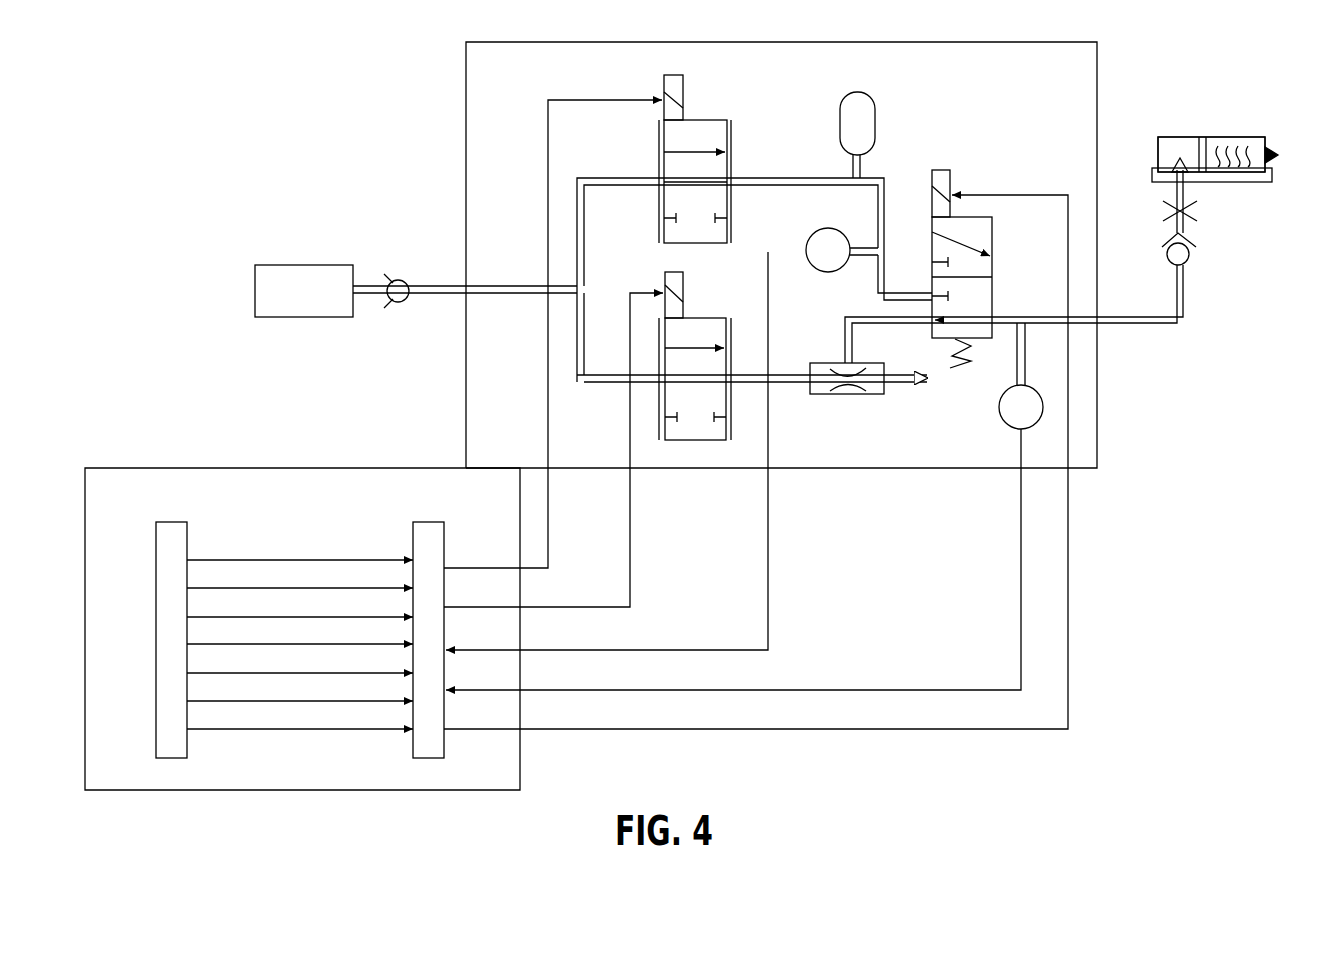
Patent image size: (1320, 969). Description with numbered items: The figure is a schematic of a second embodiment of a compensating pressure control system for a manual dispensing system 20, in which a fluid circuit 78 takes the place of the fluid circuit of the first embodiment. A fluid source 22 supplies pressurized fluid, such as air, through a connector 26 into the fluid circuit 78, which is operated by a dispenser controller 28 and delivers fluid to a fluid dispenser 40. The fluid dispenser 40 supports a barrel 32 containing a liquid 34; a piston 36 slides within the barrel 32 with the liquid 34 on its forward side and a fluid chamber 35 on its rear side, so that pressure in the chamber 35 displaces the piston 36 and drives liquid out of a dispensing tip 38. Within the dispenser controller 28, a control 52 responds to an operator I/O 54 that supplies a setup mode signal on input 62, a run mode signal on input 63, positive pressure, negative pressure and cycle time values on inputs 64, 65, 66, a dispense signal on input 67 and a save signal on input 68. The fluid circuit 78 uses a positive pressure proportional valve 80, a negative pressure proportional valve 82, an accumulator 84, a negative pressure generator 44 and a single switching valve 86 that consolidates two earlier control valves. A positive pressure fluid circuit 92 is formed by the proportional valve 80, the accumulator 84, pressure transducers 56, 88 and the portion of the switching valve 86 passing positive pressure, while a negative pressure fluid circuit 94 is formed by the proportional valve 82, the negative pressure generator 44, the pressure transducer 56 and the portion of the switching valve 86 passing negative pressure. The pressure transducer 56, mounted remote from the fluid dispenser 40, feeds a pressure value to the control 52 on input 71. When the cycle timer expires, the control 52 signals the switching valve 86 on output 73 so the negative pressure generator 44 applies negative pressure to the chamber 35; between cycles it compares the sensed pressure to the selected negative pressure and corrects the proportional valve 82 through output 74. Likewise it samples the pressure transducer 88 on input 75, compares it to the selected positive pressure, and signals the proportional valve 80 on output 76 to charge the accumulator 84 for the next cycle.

The manual dispensing system 20 is at (186, 167).
The fluid source 22 is at (275, 265).
The connector 26 is at (409, 281).
The dispenser controller 28 is at (130, 742).
The barrel 32 is at (1166, 137).
The liquid 34 is at (1255, 137).
The fluid chamber 35 is at (1158, 150).
The piston 36 is at (1203, 137).
The dispensing tip 38 is at (1279, 156).
The fluid dispenser 40 is at (1236, 187).
The negative pressure generator 44 is at (818, 396).
The control 52 is at (413, 532).
The operator I/O 54 is at (156, 532).
The pressure transducer 56 is at (1000, 402).
The setup mode control input 62 is at (383, 560).
The run mode control input 63 is at (383, 588).
The positive pressure control input 64 is at (388, 617).
The negative pressure control input 65 is at (390, 644).
The cycle time control input 66 is at (383, 673).
The dispense control input 67 is at (378, 701).
The save control input 68 is at (378, 729).
The pressure control input 71 is at (465, 690).
The switching valve control output 73 is at (465, 729).
The negative pressure proportional valve control output 74 is at (465, 607).
The positive pressure control input 75 is at (465, 650).
The positive pressure proportional valve control output 76 is at (465, 568).
The fluid circuit 78 is at (515, 194).
The positive pressure proportional valve 80 is at (731, 128).
The negative pressure proportional valve 82 is at (731, 325).
The accumulator 84 is at (875, 118).
The switching valve 86 is at (993, 240).
The pressure transducer 88 is at (826, 272).
The positive pressure fluid circuit 92 is at (832, 198).
The negative pressure fluid circuit 94 is at (787, 356).